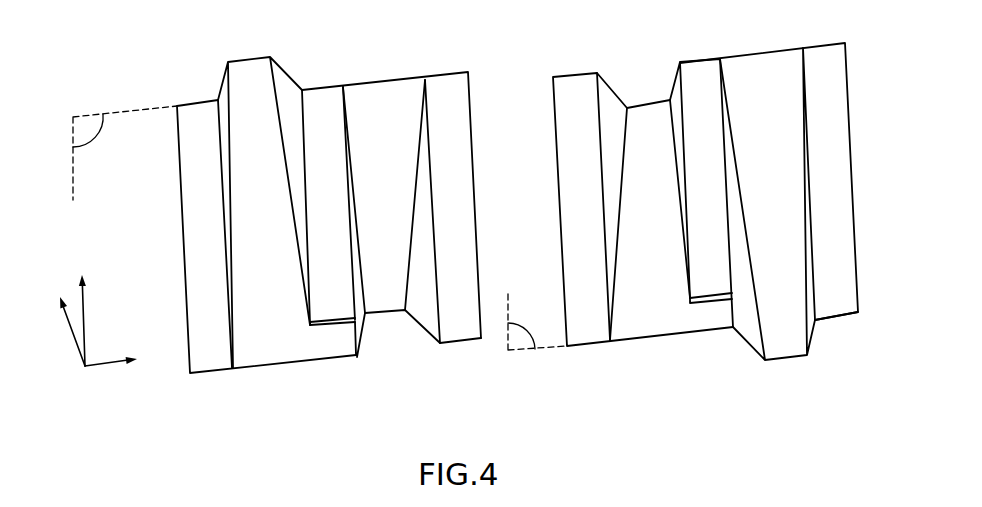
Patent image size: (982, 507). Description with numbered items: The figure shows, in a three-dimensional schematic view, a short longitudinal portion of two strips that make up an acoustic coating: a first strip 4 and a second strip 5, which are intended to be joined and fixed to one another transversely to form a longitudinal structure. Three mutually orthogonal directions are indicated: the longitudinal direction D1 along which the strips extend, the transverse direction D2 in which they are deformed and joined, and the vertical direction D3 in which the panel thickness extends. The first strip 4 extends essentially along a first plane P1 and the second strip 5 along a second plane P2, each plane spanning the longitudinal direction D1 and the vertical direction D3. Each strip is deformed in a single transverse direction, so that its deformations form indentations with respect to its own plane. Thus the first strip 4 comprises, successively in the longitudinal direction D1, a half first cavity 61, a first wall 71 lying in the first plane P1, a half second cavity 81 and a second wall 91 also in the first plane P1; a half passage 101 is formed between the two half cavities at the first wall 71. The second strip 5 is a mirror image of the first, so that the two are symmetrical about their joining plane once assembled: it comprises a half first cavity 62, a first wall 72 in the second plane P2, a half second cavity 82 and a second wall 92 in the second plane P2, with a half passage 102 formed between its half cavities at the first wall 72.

The first strip 4 is at (183, 73).
The second strip 5 is at (798, 32).
The half first cavity 61 is at (252, 78).
The half first cavity 62 is at (642, 85).
The first wall 71 is at (322, 118).
The first wall 72 is at (703, 72).
The half second cavity 81 is at (383, 112).
The half second cavity 82 is at (783, 328).
The second wall 91 is at (448, 98).
The second wall 92 is at (830, 152).
The half passage 101 is at (332, 338).
The half passage 102 is at (710, 313).
The first plane P1 is at (125, 153).
The second plane P2 is at (537, 321).
The longitudinal direction D1 is at (120, 349).
The transverse direction D2 is at (57, 328).
The vertical direction D3 is at (98, 319).